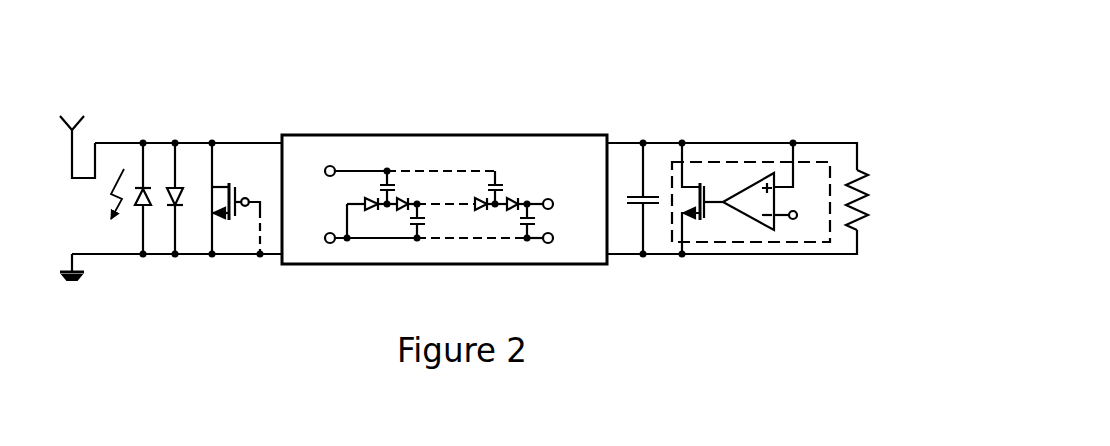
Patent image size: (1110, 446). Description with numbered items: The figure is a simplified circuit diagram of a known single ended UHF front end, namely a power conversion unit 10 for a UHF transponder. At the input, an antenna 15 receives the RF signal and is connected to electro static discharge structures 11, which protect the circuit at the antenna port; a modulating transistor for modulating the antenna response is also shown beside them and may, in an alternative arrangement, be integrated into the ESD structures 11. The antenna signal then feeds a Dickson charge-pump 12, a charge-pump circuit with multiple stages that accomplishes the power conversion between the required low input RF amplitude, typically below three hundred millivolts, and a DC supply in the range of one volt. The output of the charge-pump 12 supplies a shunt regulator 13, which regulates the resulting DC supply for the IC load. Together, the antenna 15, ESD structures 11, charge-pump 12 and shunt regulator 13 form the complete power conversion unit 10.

The power conversion unit 10 is at (556, 80).
The electro static discharge structures 11 is at (143, 165).
The Dickson charge-pump 12 is at (398, 135).
The shunt regulator 13 is at (708, 162).
The antenna 15 is at (83, 123).